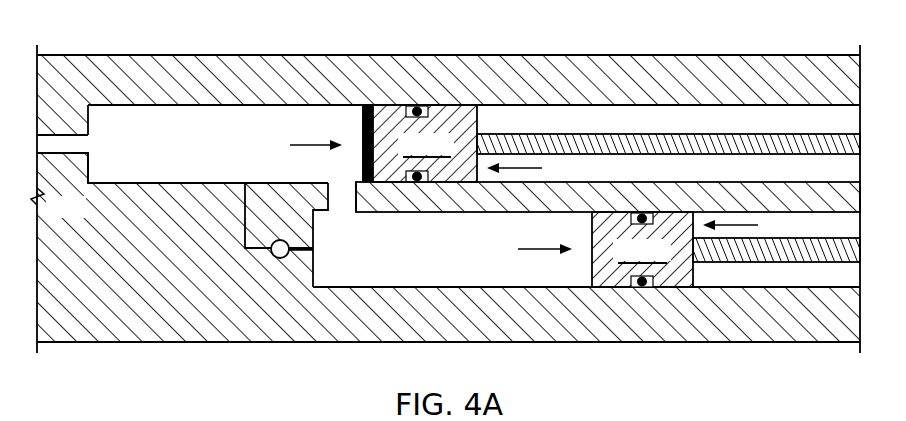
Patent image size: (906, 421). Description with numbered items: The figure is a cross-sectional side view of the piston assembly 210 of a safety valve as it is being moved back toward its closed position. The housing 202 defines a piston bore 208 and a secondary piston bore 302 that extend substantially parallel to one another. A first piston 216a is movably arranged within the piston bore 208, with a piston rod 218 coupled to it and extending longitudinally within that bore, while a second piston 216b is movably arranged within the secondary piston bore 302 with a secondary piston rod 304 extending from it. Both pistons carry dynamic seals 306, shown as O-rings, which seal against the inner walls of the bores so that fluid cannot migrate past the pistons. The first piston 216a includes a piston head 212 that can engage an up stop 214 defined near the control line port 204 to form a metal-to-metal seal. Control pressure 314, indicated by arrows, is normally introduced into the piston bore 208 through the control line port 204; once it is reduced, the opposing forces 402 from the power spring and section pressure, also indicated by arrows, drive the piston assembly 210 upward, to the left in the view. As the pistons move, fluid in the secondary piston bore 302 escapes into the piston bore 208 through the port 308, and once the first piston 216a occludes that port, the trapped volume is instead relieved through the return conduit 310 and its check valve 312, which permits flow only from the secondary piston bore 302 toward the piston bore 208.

The housing 202 is at (620, 62).
The control line port 204 is at (61, 156).
The piston bore 208 is at (266, 106).
The piston assembly 210 is at (220, 36).
The piston head 212 is at (362, 115).
The up stop 214 is at (88, 158).
The first piston 216a is at (425, 143).
The second piston 216b is at (642, 249).
The piston rod 218 is at (742, 136).
The secondary piston bore 302 is at (512, 287).
The secondary piston rod 304 is at (745, 265).
The dynamic seals 306 is at (418, 107).
The port 308 is at (328, 185).
The return conduit 310 is at (253, 203).
The check valve 312 is at (288, 254).
The control pressure 314 is at (317, 141).
The opposing forces 402 is at (730, 197).